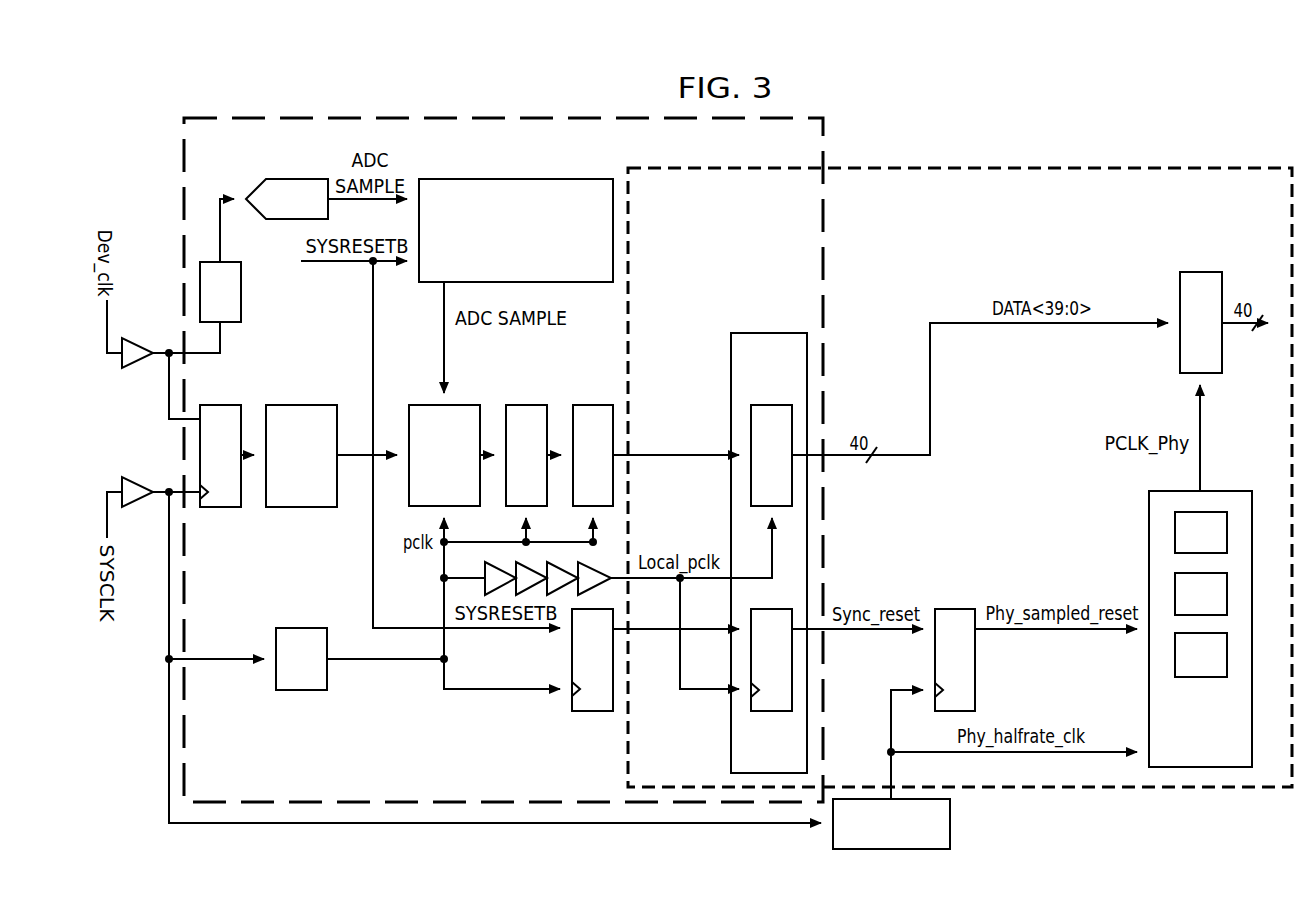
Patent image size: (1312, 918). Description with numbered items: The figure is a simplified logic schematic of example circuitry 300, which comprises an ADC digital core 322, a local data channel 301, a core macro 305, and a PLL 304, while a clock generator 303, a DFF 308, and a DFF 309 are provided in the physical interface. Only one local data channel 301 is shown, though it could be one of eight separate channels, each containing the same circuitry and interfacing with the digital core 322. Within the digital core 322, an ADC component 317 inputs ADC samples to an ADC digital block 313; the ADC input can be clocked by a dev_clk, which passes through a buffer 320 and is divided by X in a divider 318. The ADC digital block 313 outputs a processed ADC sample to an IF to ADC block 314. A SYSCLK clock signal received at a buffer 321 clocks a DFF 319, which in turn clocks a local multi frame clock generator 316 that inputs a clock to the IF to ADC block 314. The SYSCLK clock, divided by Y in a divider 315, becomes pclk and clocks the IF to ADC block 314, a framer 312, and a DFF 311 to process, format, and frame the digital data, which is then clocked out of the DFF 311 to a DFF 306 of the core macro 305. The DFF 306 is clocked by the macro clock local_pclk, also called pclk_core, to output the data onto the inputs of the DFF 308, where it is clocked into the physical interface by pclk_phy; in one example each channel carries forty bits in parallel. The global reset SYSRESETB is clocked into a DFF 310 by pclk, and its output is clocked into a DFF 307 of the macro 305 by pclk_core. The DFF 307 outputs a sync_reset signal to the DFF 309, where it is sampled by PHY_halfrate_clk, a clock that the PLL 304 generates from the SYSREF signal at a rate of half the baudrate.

The circuitry 300 is at (476, 73).
The local data channel 301 is at (1145, 165).
The clock generator 303 is at (1137, 682).
The PLL 304 is at (950, 828).
The core macro 305 is at (774, 322).
The DFF 306 is at (763, 403).
The DFF 307 is at (773, 712).
The DFF 308 is at (1206, 271).
The DFF 309 is at (975, 660).
The DFF 310 is at (593, 712).
The DFF 311 is at (590, 403).
The framer 312 is at (520, 403).
The ADC digital block 313 is at (515, 178).
The IF to ADC block 314 is at (425, 403).
The divider 315 is at (300, 691).
The local multi frame clock generator 316 is at (303, 508).
The ADC component 317 is at (295, 178).
The divider 318 is at (242, 307).
The DFF 319 is at (221, 508).
The device clock buffer 320 is at (139, 338).
The buffer 321 is at (135, 477).
The ADC digital core 322 is at (334, 112).